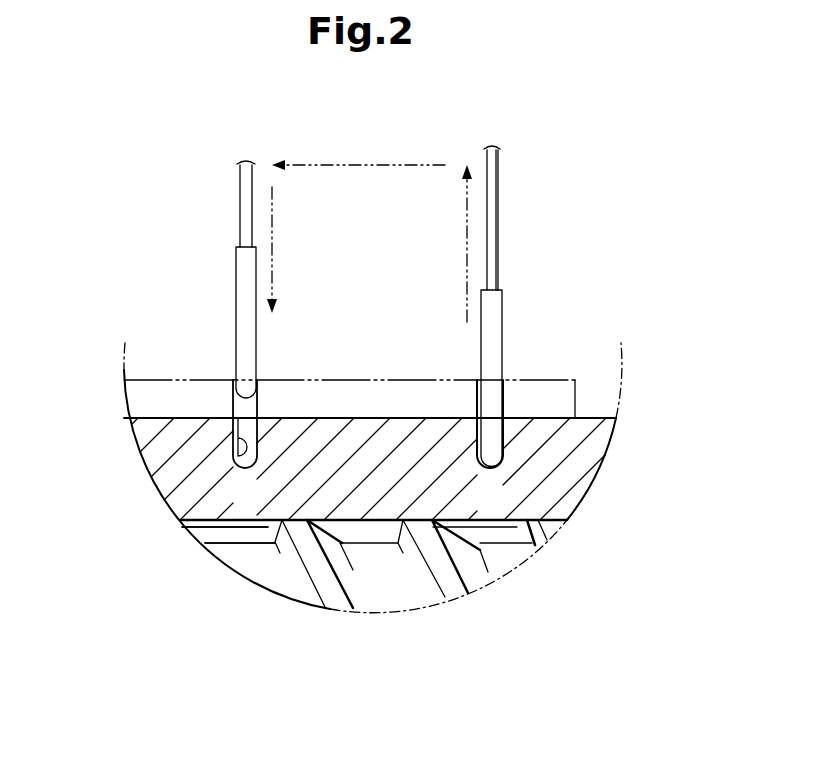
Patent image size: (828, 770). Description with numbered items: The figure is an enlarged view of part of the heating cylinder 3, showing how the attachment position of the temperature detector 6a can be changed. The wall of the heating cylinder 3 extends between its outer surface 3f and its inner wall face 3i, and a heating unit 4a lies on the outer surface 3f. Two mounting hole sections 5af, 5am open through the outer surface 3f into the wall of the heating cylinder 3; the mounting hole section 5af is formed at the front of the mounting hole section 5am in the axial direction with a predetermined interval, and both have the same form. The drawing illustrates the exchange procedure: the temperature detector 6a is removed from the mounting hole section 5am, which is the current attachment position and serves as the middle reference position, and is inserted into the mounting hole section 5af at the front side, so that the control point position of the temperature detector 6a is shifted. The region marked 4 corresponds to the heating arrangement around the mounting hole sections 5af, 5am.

The heating cylinder 3 is at (598, 410).
The outer surface 3f is at (160, 418).
The inner wall face 3i is at (250, 522).
The molded product 4 is at (515, 545).
The heating unit 4a is at (383, 380).
The mounting hole section 5af is at (233, 462).
The mounting hole section 5am is at (490, 472).
The temperature detector 6a is at (236, 297).